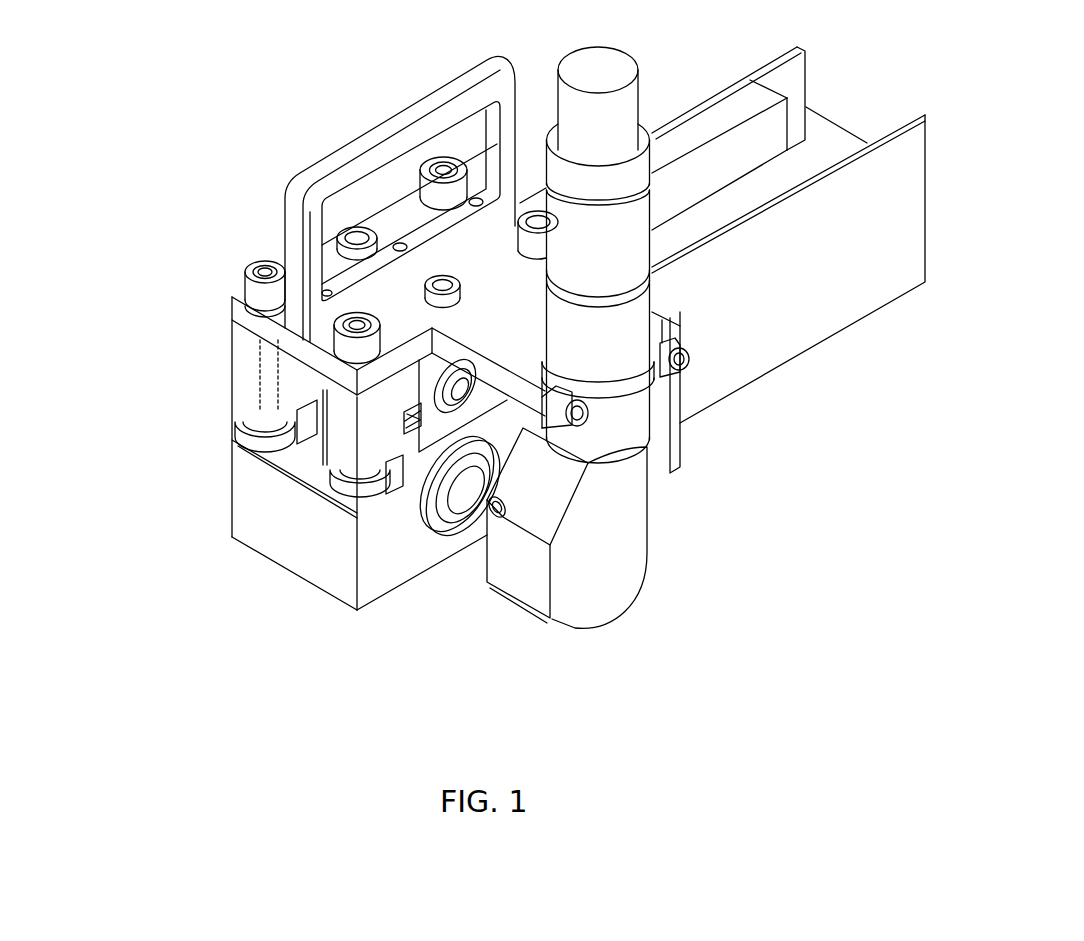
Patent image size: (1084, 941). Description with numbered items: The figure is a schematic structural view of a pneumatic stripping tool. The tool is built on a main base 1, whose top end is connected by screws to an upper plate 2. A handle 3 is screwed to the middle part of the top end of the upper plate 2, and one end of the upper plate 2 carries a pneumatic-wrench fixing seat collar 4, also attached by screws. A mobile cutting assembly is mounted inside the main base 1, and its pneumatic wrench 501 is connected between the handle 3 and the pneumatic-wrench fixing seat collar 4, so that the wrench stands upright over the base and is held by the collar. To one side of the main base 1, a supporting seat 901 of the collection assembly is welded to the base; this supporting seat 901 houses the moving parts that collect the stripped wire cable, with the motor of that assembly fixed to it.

The main base 1 is at (270, 517).
The upper plate 2 is at (243, 318).
The handle 3 is at (300, 184).
The pneumatic-wrench fixing seat collar 4 is at (643, 397).
The pneumatic wrench 501 is at (613, 307).
The supporting seat 901 is at (767, 250).